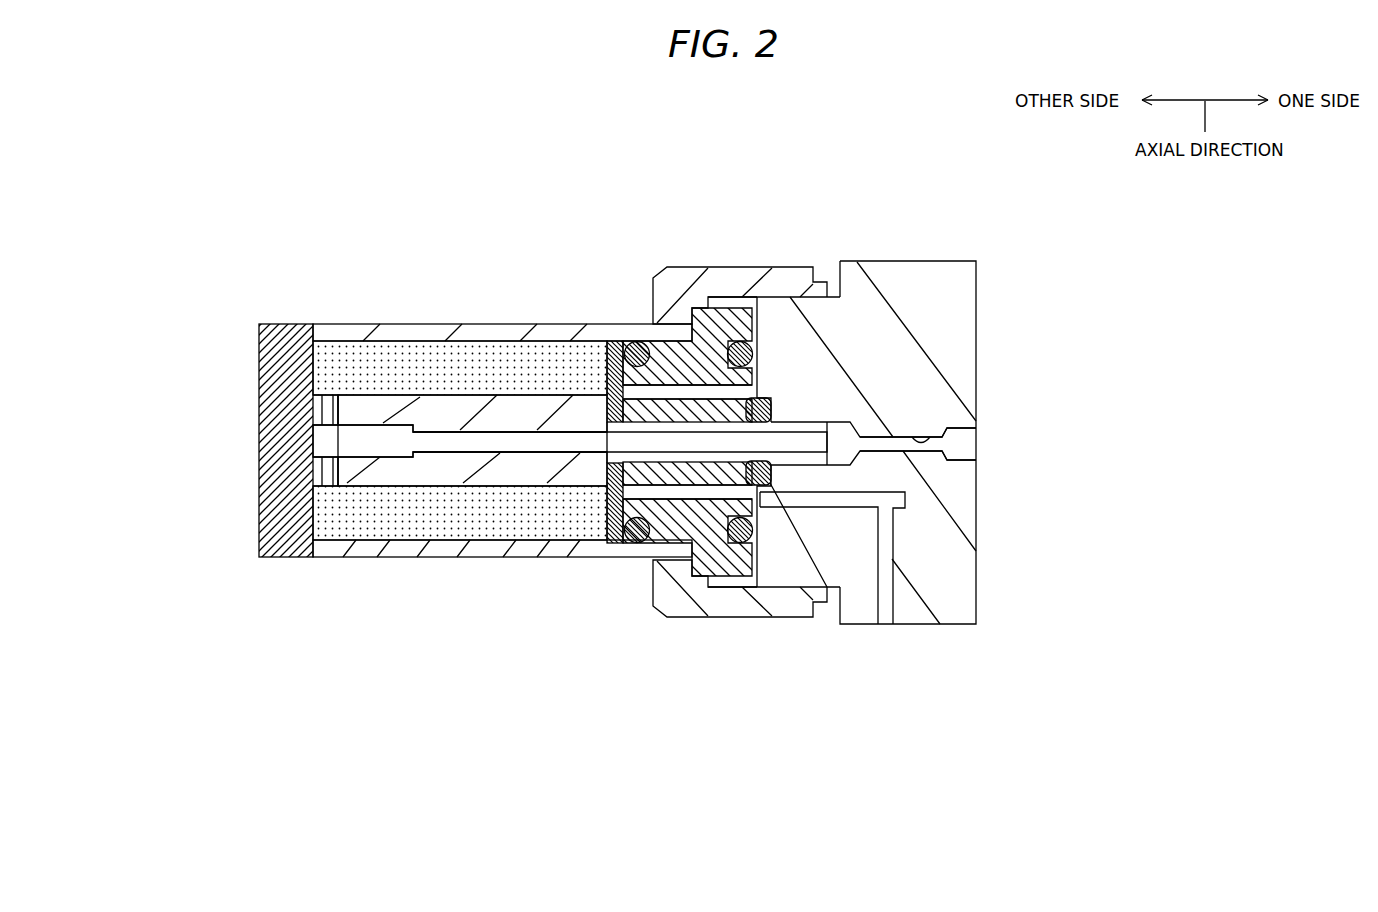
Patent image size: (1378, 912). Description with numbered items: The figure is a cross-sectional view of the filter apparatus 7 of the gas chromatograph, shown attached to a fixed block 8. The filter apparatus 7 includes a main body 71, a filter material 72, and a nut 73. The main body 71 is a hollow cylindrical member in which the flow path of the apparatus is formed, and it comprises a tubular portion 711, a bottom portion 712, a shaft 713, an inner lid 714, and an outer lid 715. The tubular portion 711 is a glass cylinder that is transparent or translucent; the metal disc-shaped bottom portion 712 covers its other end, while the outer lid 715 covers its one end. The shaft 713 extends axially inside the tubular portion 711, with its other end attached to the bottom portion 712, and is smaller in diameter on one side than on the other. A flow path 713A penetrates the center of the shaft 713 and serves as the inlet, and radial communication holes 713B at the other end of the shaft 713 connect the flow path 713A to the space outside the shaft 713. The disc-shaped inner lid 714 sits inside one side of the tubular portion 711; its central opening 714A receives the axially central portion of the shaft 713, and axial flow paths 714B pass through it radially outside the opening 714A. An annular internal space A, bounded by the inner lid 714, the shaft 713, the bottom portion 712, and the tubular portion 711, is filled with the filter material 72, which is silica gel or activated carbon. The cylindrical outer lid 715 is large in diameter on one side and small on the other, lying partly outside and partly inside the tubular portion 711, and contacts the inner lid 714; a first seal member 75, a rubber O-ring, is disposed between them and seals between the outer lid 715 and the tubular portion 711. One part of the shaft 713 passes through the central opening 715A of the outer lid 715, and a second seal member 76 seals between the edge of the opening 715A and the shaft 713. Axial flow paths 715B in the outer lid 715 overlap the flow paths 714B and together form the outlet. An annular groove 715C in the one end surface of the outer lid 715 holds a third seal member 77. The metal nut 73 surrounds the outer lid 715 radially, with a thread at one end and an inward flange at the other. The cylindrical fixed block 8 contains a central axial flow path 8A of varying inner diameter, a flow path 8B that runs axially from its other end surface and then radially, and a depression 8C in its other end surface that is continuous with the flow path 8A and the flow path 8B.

The filter apparatus 7 is at (244, 327).
The main body 71 is at (448, 324).
The tubular portion 711 is at (390, 322).
The bottom portion 712 is at (283, 322).
The shaft 713 is at (480, 484).
The flow path 713A is at (448, 498).
The communication holes 713B is at (323, 400).
The inner lid 714 is at (616, 340).
The opening 714A is at (607, 492).
The flow paths 714B is at (610, 342).
The outer lid 715 is at (720, 308).
The opening 715A is at (725, 520).
The flow paths 715B is at (698, 392).
The groove 715C is at (752, 531).
The filter material 72 is at (493, 342).
The nut 73 is at (742, 267).
The first seal member 75 is at (606, 445).
The second seal member 76 is at (770, 482).
The third seal member 77 is at (750, 537).
The fixed block 8 is at (977, 347).
The flow path 8A is at (930, 440).
The flow path 8B is at (870, 500).
The depression 8C is at (760, 348).
The internal space A is at (350, 515).